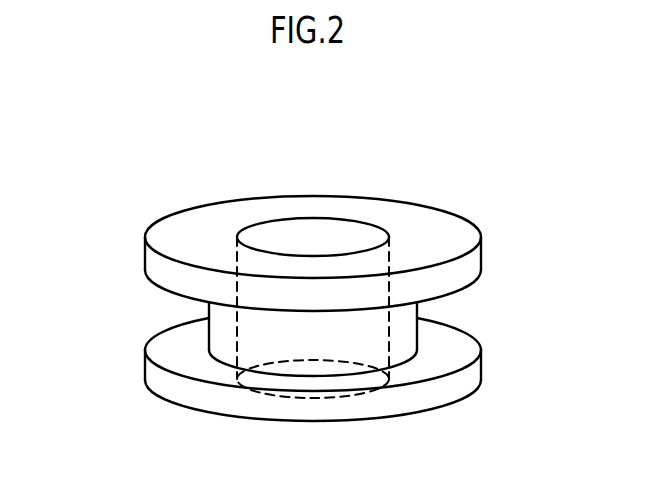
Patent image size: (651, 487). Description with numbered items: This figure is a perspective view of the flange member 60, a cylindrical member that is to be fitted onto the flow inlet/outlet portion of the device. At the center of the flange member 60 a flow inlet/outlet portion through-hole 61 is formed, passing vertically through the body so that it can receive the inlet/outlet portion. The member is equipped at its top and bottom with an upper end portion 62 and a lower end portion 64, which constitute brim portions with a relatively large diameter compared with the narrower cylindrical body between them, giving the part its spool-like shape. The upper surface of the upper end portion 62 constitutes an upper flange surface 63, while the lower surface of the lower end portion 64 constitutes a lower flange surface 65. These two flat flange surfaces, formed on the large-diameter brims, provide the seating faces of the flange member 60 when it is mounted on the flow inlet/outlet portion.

The flange member 60 is at (214, 194).
The flow inlet/outlet portion through-hole 61 is at (308, 235).
The upper end portion 62 is at (152, 265).
The upper flange surface 63 is at (175, 243).
The lower end portion 64 is at (152, 373).
The lower flange surface 65 is at (225, 412).